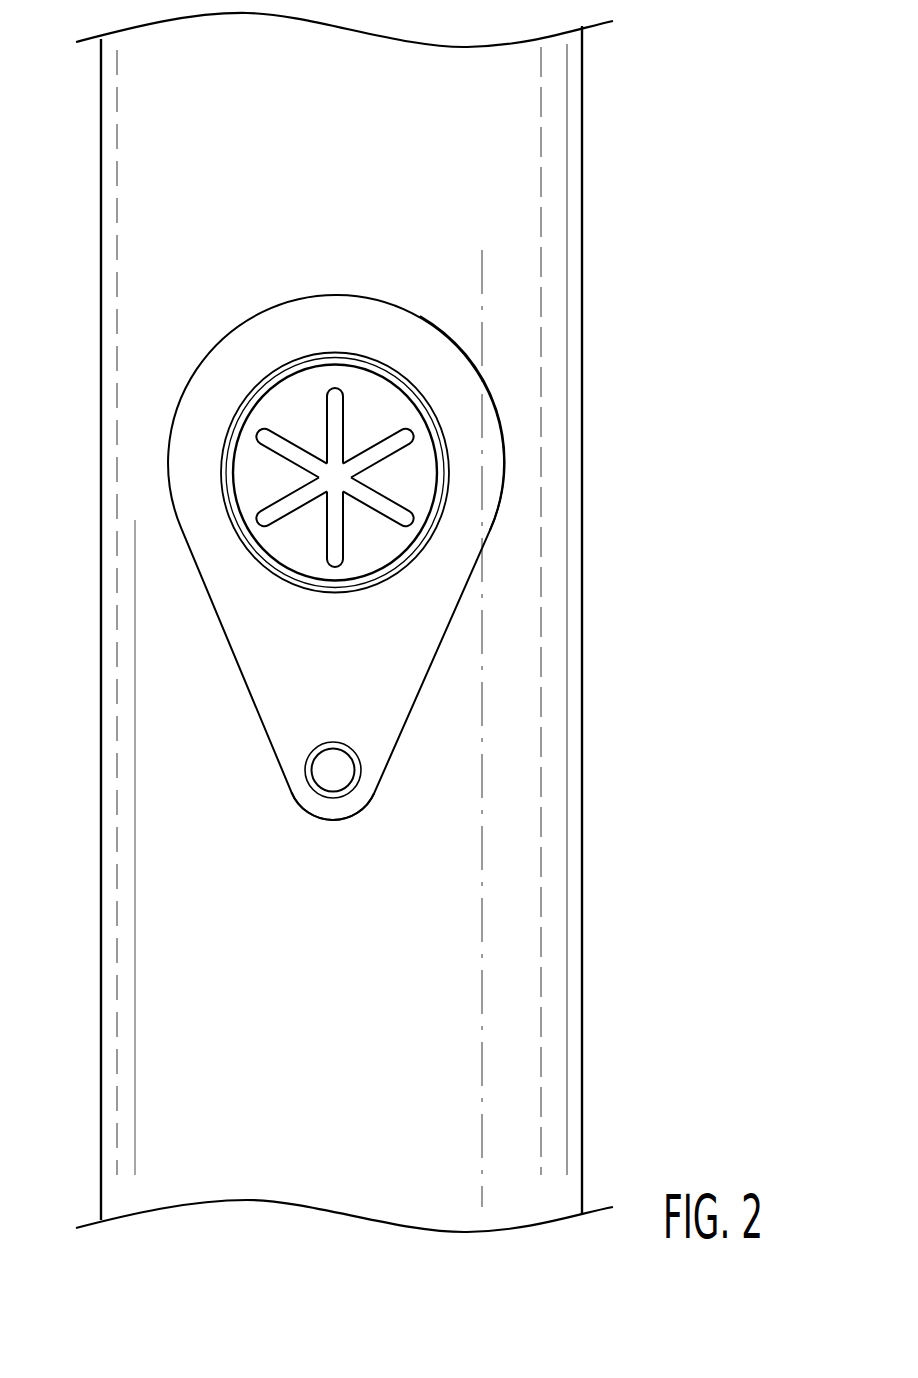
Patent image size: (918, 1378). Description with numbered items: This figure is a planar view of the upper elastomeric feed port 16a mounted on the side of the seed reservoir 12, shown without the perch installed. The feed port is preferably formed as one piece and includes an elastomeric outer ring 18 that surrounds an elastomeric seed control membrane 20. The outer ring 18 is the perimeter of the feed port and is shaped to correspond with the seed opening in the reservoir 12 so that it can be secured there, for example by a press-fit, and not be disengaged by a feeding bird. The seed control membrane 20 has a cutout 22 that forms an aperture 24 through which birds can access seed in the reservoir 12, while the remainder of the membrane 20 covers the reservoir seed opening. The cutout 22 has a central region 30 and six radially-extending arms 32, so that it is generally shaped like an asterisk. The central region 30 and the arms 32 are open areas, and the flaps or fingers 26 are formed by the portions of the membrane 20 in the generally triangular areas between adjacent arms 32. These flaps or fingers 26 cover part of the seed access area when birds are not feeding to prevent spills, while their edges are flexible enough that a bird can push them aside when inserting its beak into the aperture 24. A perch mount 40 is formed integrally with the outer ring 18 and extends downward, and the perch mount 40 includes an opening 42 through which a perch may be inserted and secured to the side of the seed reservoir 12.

The seed reservoir 12 is at (545, 258).
The upper elastomeric feed port 16a is at (483, 388).
The outer ring 18 is at (480, 457).
The seed control membrane 20 is at (422, 492).
The cutout 22 is at (333, 509).
The aperture 24 is at (338, 423).
The flaps or fingers 26 is at (317, 473).
The central region 30 is at (337, 476).
The radially-extending arms 32 is at (282, 447).
The perch mount 40 is at (345, 695).
The opening 42 is at (357, 782).